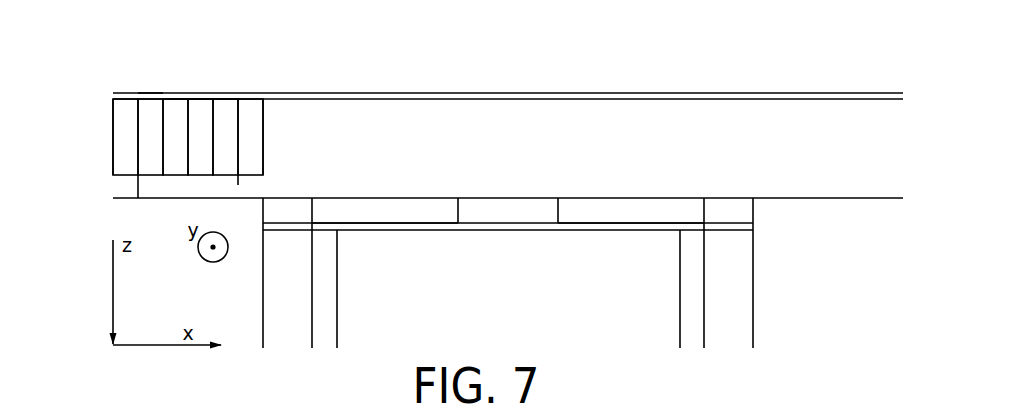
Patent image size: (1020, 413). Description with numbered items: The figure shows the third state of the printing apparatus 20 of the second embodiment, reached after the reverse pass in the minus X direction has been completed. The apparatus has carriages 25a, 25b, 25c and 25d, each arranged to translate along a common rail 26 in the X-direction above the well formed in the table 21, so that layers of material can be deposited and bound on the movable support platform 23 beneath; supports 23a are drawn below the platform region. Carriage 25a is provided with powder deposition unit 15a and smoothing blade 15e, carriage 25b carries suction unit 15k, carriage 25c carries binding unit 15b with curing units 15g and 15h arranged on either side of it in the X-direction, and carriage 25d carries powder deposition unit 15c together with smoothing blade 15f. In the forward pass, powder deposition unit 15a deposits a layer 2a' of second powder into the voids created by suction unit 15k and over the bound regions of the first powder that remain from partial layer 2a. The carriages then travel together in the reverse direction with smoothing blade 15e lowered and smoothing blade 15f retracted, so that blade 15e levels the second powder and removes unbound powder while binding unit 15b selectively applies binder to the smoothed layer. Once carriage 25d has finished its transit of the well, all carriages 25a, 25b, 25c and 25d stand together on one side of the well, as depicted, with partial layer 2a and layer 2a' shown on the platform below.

The printing apparatus 20 is at (867, 83).
The common rail 26 is at (663, 91).
The table 21 is at (813, 197).
The powder deposition unit 15a is at (125, 137).
The suction unit 15k is at (150, 137).
The curing unit 15g is at (175, 137).
The binding unit 15b is at (200, 137).
The curing unit 15h is at (225, 137).
The powder deposition unit 15c is at (250, 137).
The smoothing blade 15e is at (134, 183).
The smoothing blade 15f is at (242, 183).
The carriage 25a is at (112, 102).
The carriage 25b is at (147, 91).
The carriage 25c is at (165, 86).
The carriage 25d is at (269, 122).
The movable support platform 23 is at (470, 241).
The partial layer 2a is at (508, 245).
The layer of second powder 2a' is at (508, 273).
The support post 23a is at (340, 318).